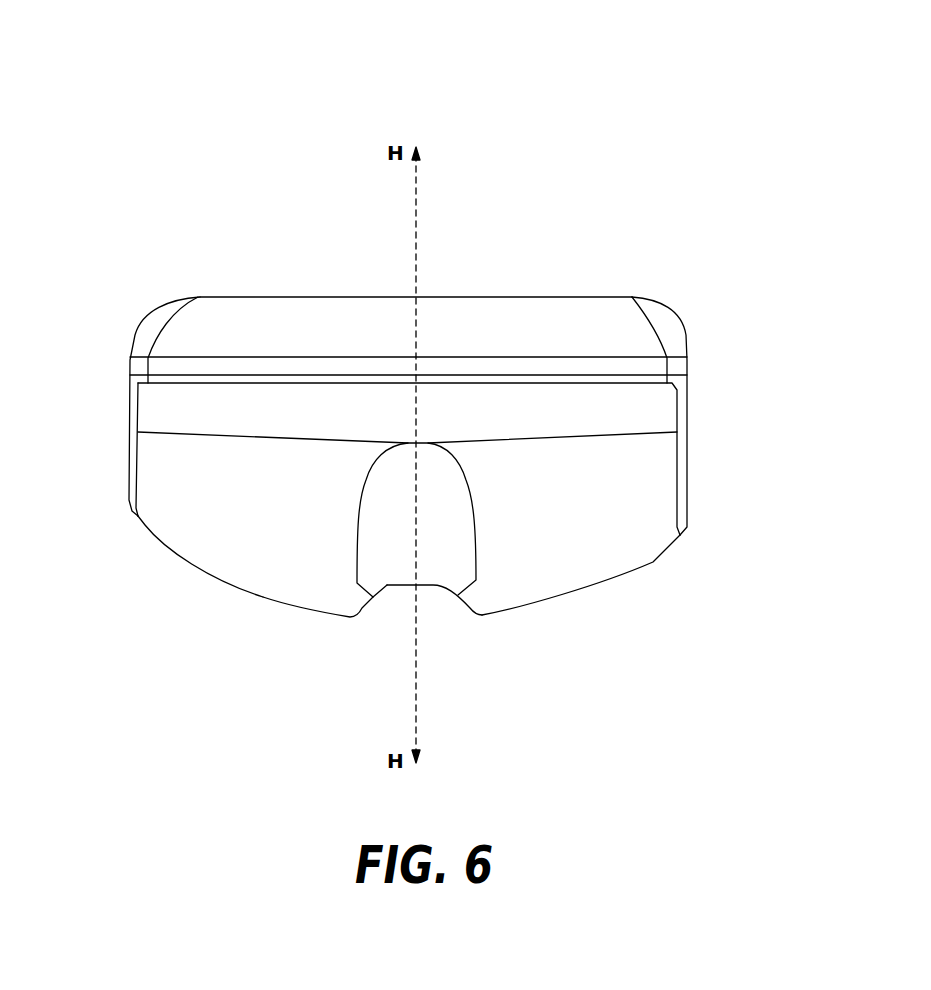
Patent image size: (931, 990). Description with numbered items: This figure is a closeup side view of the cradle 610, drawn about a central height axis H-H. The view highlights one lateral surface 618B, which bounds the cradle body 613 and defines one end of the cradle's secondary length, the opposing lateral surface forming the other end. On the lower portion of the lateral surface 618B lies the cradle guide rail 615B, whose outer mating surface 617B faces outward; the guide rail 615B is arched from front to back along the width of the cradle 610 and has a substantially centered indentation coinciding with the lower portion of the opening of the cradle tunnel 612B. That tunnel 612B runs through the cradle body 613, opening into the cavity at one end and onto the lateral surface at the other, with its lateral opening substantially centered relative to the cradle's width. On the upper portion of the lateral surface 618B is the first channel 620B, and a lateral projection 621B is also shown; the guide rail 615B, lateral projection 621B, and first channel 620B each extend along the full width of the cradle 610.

The cradle 610 is at (740, 52).
The cradle tunnel 612B is at (435, 533).
The cradle body 613 is at (217, 445).
The cradle guide rail 615B is at (260, 582).
The outer mating surface 617B is at (571, 576).
The lateral surface 618B is at (262, 507).
The first channel 620B is at (677, 388).
The lateral projection 621B is at (615, 332).